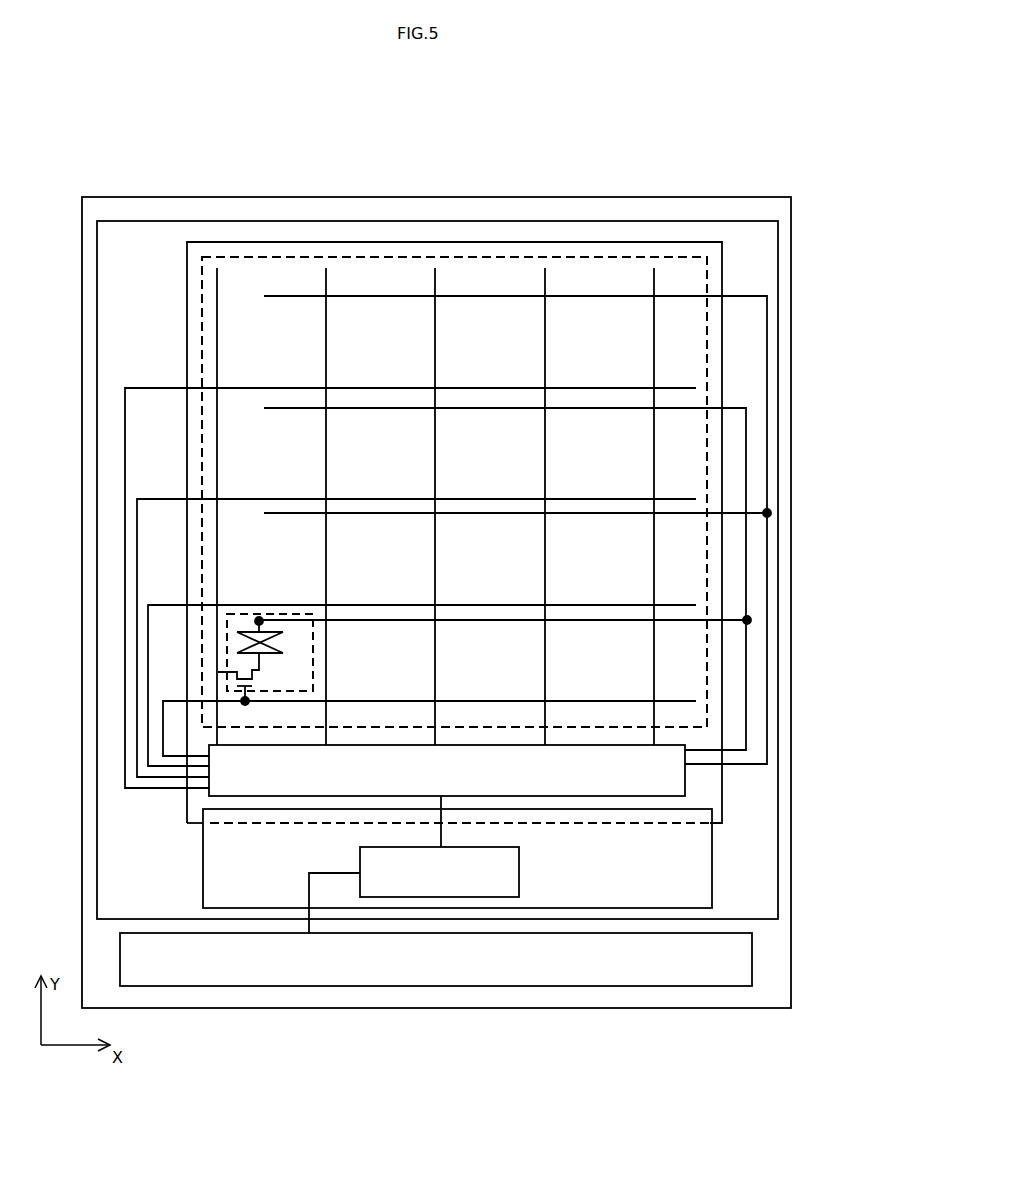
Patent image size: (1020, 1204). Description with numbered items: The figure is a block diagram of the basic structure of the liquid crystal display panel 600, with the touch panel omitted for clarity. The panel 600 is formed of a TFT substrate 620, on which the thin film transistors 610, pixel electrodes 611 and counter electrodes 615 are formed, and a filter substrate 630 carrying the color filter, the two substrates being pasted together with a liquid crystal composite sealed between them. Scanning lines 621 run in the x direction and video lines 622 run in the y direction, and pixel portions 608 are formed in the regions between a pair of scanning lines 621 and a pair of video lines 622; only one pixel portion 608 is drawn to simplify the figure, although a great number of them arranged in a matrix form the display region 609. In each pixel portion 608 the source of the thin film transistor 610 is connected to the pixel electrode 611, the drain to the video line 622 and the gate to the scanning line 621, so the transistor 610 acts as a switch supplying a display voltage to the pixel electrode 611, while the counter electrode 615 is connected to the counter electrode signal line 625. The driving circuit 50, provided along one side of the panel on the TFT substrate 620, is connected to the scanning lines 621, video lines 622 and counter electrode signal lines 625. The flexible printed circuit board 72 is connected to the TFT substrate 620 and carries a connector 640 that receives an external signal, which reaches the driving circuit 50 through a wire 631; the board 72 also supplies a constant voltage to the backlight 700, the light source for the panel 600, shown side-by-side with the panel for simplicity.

The liquid crystal display panel 600 is at (331, 220).
The substrate (TFT substrate) 620 is at (452, 231).
The substrate (filter substrate) 630 is at (563, 241).
The display region 609 is at (657, 255).
The video line 622 is at (217, 448).
The counter electrode signal line 625 is at (493, 513).
The scanning line 621 is at (388, 602).
The pixel portion 608 is at (297, 613).
The counter electrode 615 is at (248, 631).
The pixel electrode 611 is at (280, 643).
The thin film transistor 610 is at (257, 682).
The driving circuit 50 is at (667, 782).
The flexible printed circuit board 72 is at (228, 867).
The wire 631 is at (441, 832).
The connector 640 is at (505, 877).
The backlight 700 is at (389, 963).